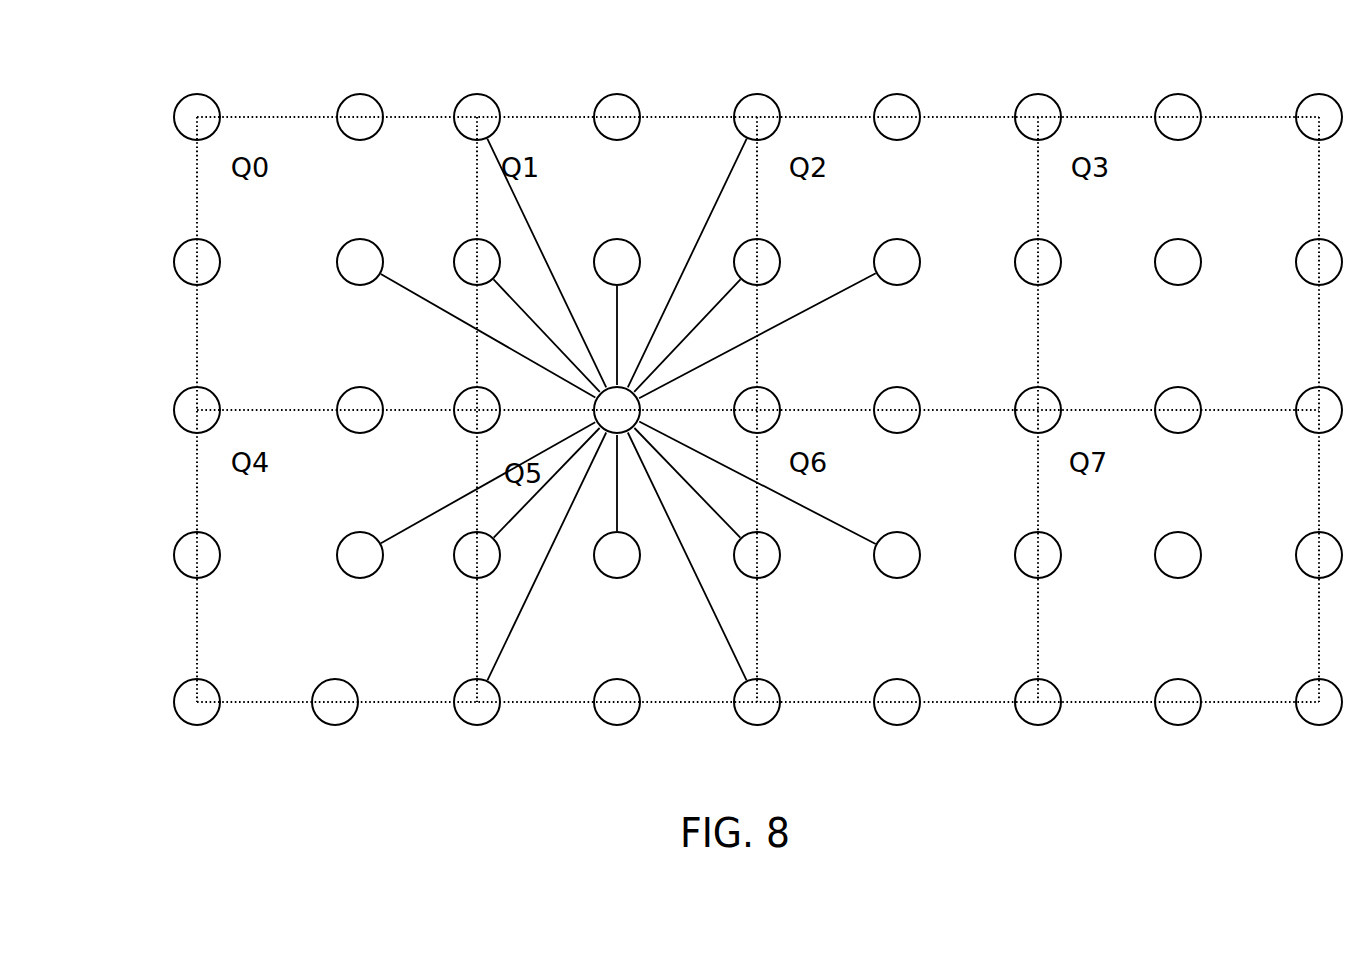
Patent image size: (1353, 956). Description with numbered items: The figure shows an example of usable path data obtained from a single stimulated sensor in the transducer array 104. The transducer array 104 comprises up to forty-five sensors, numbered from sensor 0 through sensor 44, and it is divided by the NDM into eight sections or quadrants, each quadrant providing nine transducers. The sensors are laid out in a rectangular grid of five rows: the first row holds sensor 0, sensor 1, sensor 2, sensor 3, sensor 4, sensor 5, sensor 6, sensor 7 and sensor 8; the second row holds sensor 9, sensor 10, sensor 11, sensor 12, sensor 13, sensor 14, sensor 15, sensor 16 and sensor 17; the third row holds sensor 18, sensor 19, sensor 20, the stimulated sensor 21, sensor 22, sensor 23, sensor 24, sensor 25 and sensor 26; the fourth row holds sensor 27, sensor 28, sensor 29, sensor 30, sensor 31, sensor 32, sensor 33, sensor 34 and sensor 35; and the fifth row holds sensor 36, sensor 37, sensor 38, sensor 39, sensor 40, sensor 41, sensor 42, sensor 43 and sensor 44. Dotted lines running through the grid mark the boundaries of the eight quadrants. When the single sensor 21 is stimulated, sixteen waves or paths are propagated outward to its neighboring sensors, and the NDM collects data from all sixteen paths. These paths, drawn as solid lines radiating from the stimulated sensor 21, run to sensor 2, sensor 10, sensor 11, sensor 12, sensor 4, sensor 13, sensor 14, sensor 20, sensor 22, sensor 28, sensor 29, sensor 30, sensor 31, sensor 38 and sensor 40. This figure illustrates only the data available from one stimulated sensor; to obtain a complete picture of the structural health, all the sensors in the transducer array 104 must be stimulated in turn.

The transducer array 104 is at (199, 762).
The sensor 0 is at (197, 100).
The sensor 1 is at (350, 100).
The sensor 2 is at (477, 100).
The sensor 3 is at (617, 100).
The sensor 4 is at (757, 100).
The sensor 5 is at (897, 100).
The sensor 6 is at (1038, 100).
The sensor 7 is at (1178, 100).
The sensor 8 is at (1319, 100).
The sensor 9 is at (197, 244).
The sensor 10 is at (350, 244).
The sensor 11 is at (470, 244).
The sensor 12 is at (617, 244).
The sensor 13 is at (749, 244).
The sensor 14 is at (897, 244).
The sensor 15 is at (1023, 244).
The sensor 16 is at (1178, 244).
The sensor 17 is at (1306, 244).
The sensor 18 is at (184, 392).
The sensor 19 is at (350, 392).
The sensor 20 is at (465, 392).
The stimulated sensor 21 is at (611, 392).
The sensor 22 is at (745, 392).
The sensor 23 is at (897, 392).
The sensor 24 is at (1024, 392).
The sensor 25 is at (1178, 392).
The sensor 26 is at (1306, 392).
The sensor 27 is at (184, 538).
The sensor 28 is at (350, 538).
The sensor 29 is at (469, 538).
The sensor 30 is at (610, 538).
The sensor 31 is at (749, 538).
The sensor 32 is at (897, 538).
The sensor 33 is at (1025, 538).
The sensor 34 is at (1178, 538).
The sensor 35 is at (1306, 538).
The sensor 36 is at (180, 685).
The sensor 37 is at (335, 685).
The sensor 38 is at (465, 685).
The sensor 39 is at (617, 685).
The sensor 40 is at (745, 685).
The sensor 41 is at (897, 685).
The sensor 42 is at (1025, 685).
The sensor 43 is at (1178, 685).
The sensor 44 is at (1306, 685).